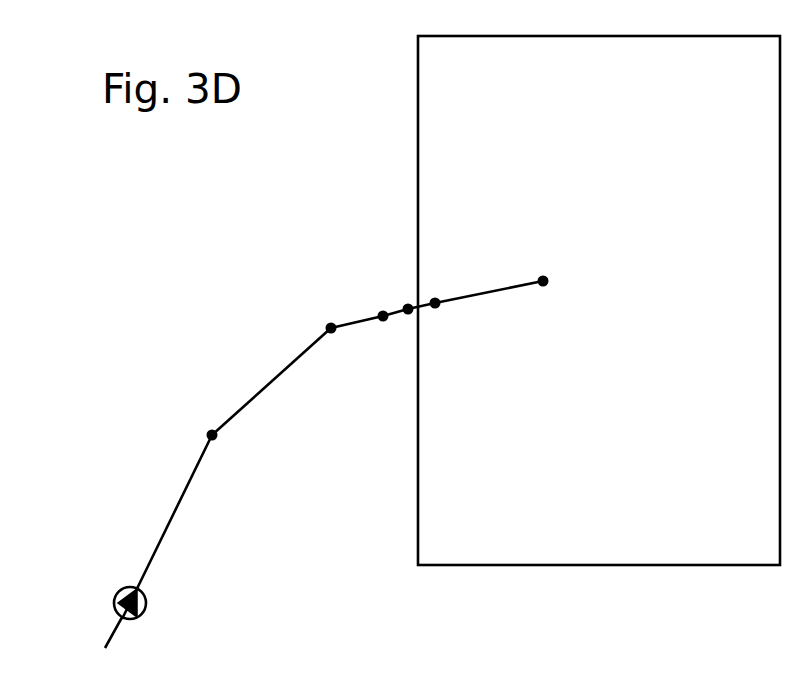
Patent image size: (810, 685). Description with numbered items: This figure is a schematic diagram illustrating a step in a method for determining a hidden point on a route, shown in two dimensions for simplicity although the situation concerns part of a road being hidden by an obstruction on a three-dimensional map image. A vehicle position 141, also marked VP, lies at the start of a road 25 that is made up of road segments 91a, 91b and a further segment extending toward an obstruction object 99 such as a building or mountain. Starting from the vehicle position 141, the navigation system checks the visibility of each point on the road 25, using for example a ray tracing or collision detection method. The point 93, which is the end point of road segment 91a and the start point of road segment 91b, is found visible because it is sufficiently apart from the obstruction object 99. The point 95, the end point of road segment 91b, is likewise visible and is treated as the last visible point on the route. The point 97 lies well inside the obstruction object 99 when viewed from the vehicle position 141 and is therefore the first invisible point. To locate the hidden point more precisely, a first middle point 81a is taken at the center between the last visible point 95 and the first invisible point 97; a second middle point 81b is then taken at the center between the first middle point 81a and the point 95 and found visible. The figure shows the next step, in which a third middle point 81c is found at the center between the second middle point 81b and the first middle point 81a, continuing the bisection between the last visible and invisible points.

The road 25 is at (253, 502).
The obstruction object 99 is at (418, 158).
The vehicle position 141 is at (117, 598).
The road segment 91a is at (167, 522).
The road segment 91b is at (277, 375).
The point 93 is at (212, 435).
The point 95 is at (331, 328).
The first middle point 81a is at (435, 303).
The second middle point 81b is at (383, 316).
The third middle point 81c is at (408, 309).
The point 97 is at (543, 281).